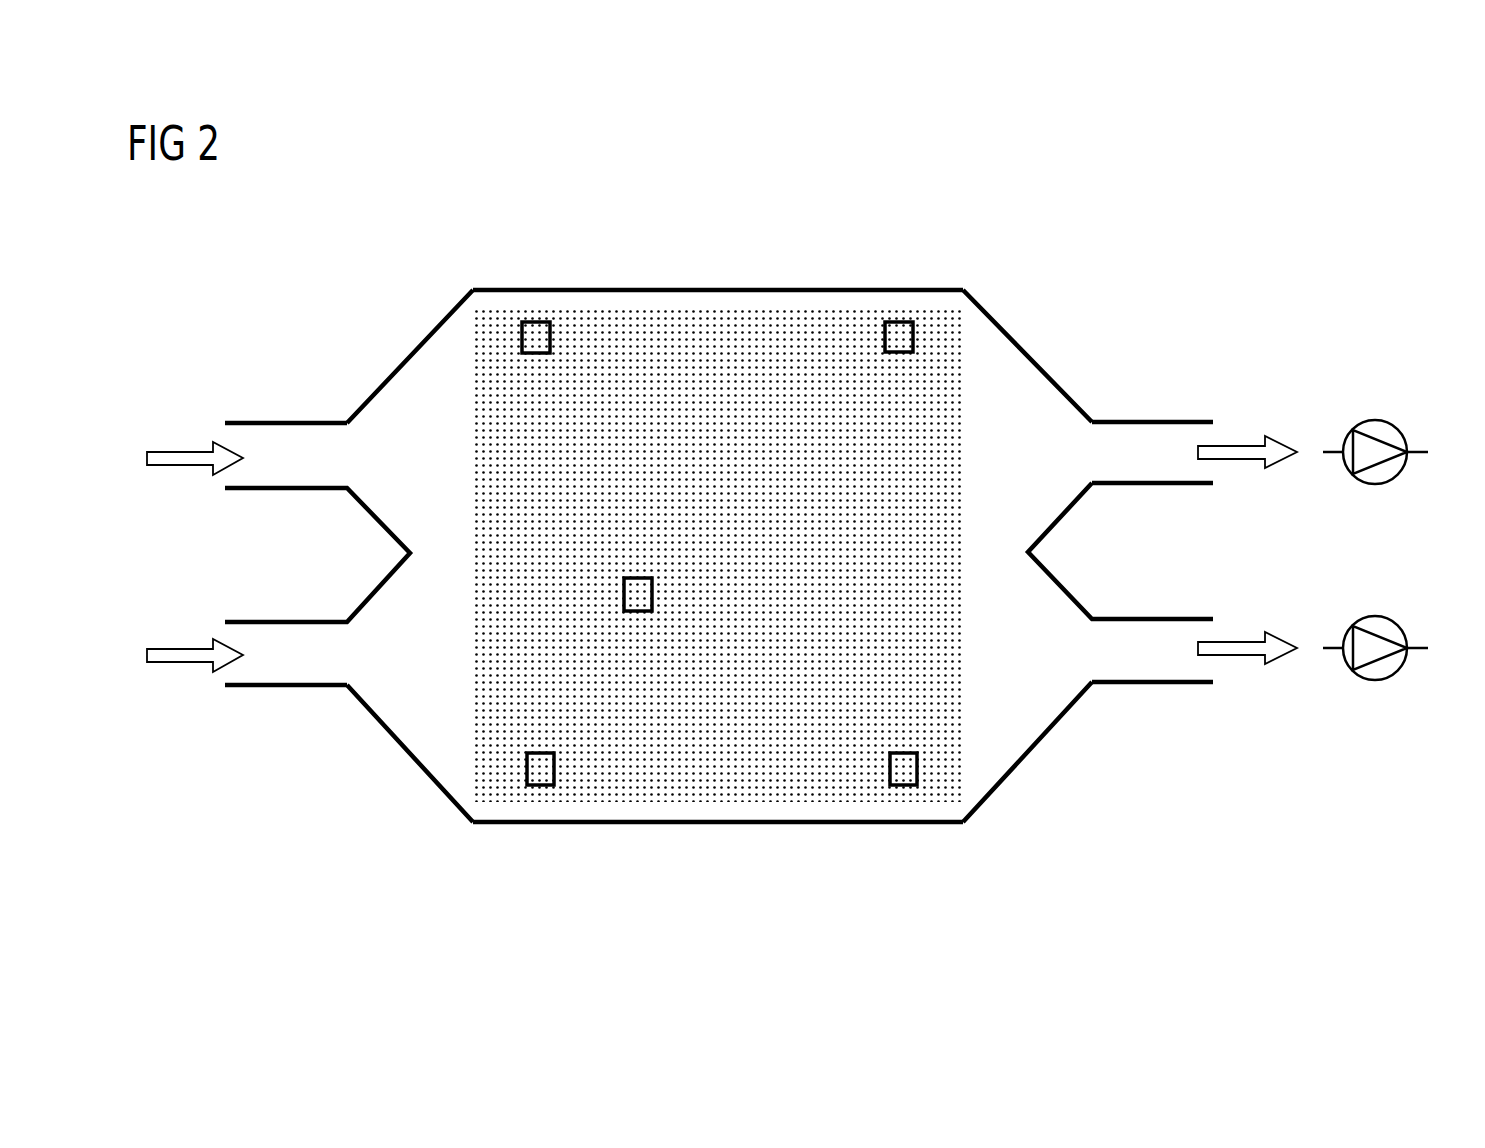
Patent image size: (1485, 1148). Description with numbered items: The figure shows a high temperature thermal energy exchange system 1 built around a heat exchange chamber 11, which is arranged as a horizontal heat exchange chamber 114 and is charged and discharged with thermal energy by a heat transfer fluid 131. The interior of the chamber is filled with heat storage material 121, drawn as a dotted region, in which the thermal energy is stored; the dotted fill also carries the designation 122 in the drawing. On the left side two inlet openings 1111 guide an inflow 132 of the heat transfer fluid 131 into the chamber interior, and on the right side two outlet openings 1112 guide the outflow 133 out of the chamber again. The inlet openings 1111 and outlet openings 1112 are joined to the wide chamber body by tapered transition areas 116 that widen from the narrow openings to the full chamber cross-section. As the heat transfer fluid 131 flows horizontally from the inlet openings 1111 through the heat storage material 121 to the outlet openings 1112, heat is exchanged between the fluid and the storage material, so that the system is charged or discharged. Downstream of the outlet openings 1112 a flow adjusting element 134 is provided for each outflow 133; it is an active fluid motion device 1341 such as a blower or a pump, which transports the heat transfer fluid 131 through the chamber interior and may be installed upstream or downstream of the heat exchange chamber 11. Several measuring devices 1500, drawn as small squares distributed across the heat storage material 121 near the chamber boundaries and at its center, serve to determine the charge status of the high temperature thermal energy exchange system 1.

The high temperature thermal energy exchange system 1 is at (785, 500).
The heat exchange chamber 11 is at (1094, 175).
The horizontal heat exchange chamber 114 is at (770, 300).
The tapered transition areas 116 is at (405, 367).
The inlet opening 1111 is at (298, 433).
The outlet opening 1112 is at (1152, 432).
The heat storage material 121 is at (775, 760).
The filter element 122 is at (718, 597).
The heat transfer fluid 131 is at (186, 556).
The inflow 132 is at (177, 458).
The outflow 133 is at (1243, 450).
The flow adjusting element 134 is at (1381, 551).
The active fluid motion device 1341 is at (1375, 420).
The measuring devices 1500 is at (537, 322).